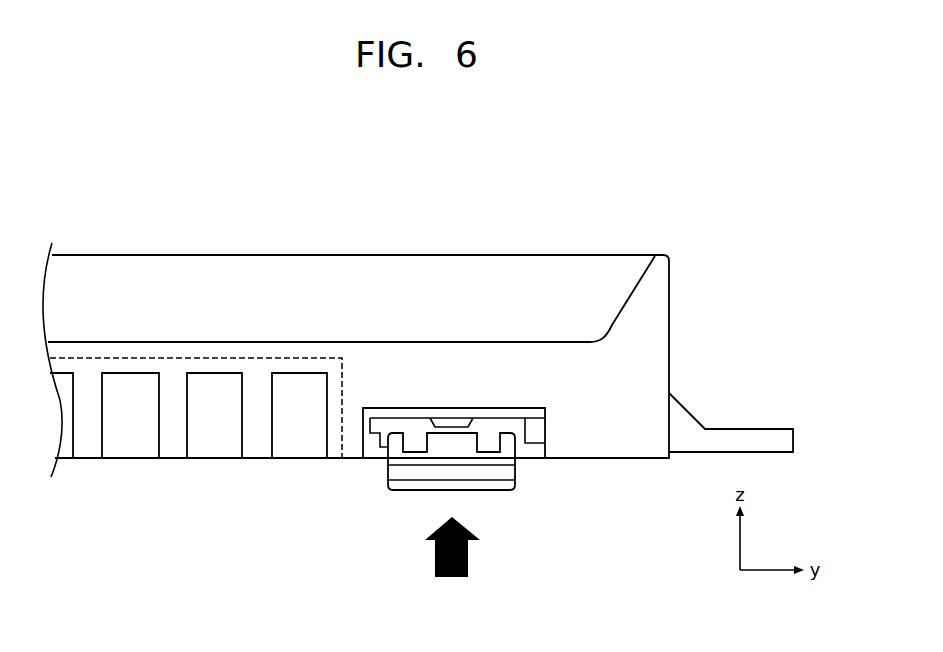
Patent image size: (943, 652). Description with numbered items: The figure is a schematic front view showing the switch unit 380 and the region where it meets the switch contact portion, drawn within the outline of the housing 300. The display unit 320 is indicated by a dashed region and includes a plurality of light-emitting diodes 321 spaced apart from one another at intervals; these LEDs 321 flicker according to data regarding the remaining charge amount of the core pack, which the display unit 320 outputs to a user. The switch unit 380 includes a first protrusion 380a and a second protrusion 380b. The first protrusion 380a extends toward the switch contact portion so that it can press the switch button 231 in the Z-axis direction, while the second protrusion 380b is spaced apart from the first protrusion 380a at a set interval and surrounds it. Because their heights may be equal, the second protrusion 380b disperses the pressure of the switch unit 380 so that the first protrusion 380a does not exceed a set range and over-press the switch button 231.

The housing 300 is at (672, 340).
The display unit 320 is at (258, 358).
The light-emitting diodes 321 is at (300, 448).
The switch button 231 is at (453, 418).
The switch unit 380 is at (468, 388).
The first protrusion 380a is at (452, 442).
The second protrusion 380b is at (510, 438).